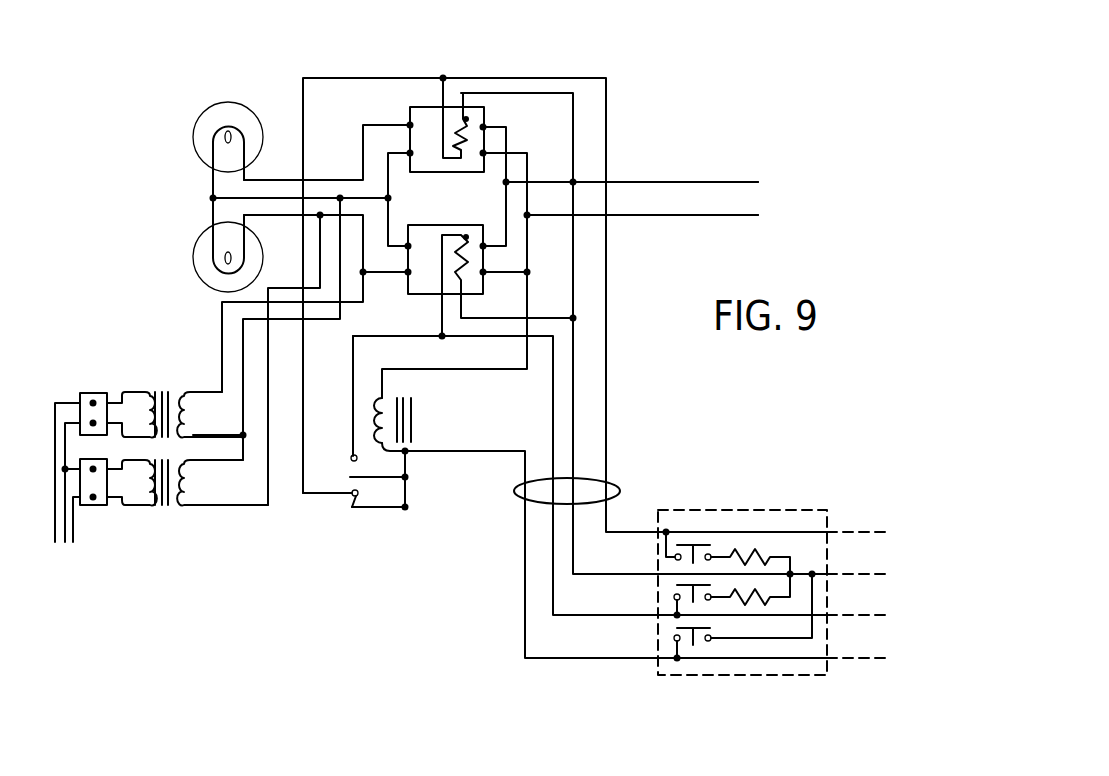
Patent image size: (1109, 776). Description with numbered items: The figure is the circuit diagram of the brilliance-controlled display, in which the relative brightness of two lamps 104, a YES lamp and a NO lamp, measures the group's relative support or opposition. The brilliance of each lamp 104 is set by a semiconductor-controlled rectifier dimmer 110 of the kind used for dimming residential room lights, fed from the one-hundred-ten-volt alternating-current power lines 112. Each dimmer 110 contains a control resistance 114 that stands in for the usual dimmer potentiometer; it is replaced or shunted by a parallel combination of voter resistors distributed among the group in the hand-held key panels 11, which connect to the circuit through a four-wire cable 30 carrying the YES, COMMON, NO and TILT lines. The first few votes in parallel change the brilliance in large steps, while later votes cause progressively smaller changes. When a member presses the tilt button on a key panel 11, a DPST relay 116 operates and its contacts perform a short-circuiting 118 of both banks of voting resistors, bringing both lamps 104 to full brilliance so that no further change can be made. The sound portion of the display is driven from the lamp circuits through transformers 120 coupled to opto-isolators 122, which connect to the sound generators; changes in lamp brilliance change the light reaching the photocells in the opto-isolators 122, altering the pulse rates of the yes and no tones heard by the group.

The key panel 11 is at (767, 510).
The four-wire cable 30 is at (613, 484).
The lamps 104 is at (203, 162).
The SCR dimmer 110 is at (465, 173).
The 110 VAC power lines 112 is at (687, 182).
The variable resistors 114 is at (467, 119).
The DPST relay 116 is at (413, 407).
The short-circuiting 118 is at (351, 457).
The transformers 120 is at (155, 392).
The opto-isolators 122 is at (103, 393).